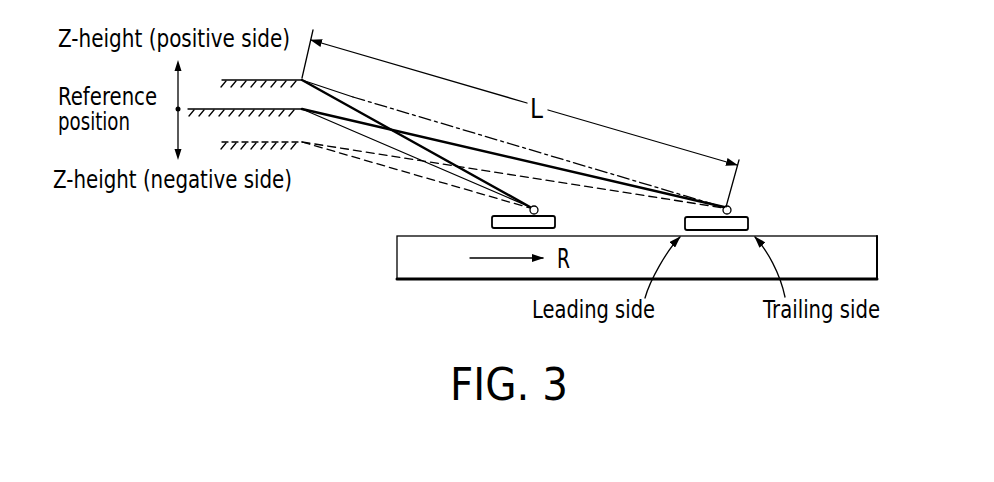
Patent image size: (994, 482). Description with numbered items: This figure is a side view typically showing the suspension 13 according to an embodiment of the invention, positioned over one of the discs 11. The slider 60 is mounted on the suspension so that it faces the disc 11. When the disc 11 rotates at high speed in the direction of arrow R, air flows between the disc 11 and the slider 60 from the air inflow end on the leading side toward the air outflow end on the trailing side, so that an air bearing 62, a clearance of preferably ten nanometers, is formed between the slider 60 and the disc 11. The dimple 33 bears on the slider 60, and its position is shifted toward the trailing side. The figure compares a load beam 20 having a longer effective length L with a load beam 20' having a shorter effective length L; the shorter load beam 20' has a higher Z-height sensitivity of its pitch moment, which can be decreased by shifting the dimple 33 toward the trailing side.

The disc 11 is at (847, 248).
The suspension 13 is at (617, 93).
The load beam 20 is at (513, 148).
The load beam 20' is at (416, 135).
The dimple 33 is at (731, 207).
The slider 60 is at (750, 222).
The air bearing 62 is at (713, 231).